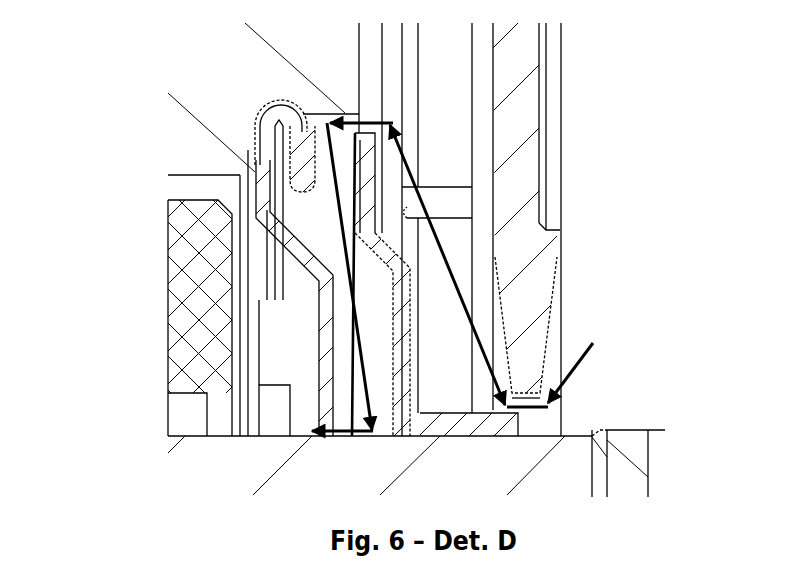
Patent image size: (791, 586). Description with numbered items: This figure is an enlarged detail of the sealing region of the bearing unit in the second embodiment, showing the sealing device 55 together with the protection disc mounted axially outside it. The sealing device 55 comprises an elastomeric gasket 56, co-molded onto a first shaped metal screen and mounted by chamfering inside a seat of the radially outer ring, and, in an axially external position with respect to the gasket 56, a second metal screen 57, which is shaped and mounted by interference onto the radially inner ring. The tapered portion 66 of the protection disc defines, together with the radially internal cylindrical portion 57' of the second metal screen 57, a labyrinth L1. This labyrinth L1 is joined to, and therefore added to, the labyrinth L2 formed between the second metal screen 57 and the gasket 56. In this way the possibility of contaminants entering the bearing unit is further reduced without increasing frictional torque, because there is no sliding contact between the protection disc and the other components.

The sealing device 55 is at (203, 148).
The elastomeric gasket 56 is at (293, 293).
The second metal screen 57 is at (240, 305).
The radially internal cylindrical portion 57' is at (480, 453).
The tapered portion 66 is at (532, 287).
The labyrinth L1 is at (565, 385).
The labyrinth L2 is at (343, 122).